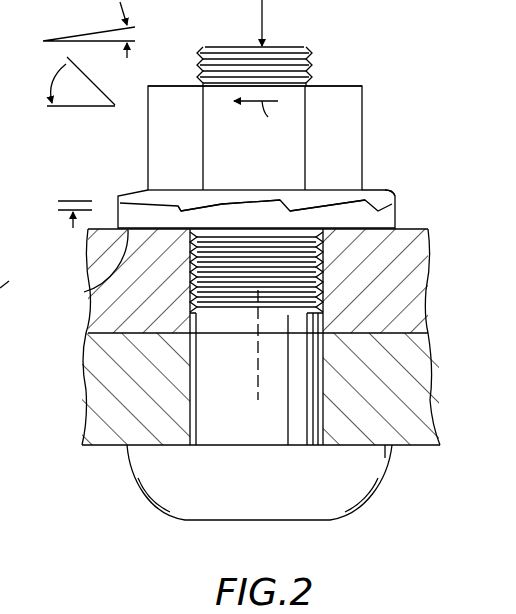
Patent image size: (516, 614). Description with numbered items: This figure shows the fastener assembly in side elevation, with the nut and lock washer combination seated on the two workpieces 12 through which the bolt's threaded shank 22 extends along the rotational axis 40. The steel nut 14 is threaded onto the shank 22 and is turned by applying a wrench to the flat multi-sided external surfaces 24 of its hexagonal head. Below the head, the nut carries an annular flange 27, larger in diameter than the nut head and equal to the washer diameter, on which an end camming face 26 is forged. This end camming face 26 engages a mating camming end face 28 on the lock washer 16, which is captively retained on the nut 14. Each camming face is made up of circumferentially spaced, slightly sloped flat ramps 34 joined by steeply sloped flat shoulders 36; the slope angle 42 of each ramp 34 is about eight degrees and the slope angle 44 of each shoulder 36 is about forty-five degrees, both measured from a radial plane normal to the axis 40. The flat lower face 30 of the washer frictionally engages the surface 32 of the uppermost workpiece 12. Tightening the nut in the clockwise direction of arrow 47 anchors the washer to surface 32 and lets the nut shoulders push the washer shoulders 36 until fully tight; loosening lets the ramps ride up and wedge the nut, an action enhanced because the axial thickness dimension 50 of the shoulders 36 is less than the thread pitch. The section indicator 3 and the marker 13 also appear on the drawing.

The section line 3 is at (262, 13).
The workpiece 12 is at (88, 328).
The joint 13 is at (8, 259).
The nut 14 is at (353, 122).
The lock washer 16 is at (383, 222).
The threaded shank 22 is at (311, 57).
The flat multi-sided external surfaces 24 is at (350, 97).
The end camming face 26 is at (242, 212).
The annular flange 27 is at (386, 197).
The camming end face 28 is at (326, 202).
The lower face 30 is at (92, 290).
The surface 32 is at (150, 212).
The flat ramps 34 is at (224, 205).
The flat shoulders 36 is at (182, 208).
The rotational axis 40 is at (258, 388).
The slope angle of each ramp 42 is at (127, 58).
The slope angle of each flat shoulder 44 is at (64, 65).
The arrow 47 is at (266, 121).
The axial thickness dimension of shoulders 50 is at (73, 199).